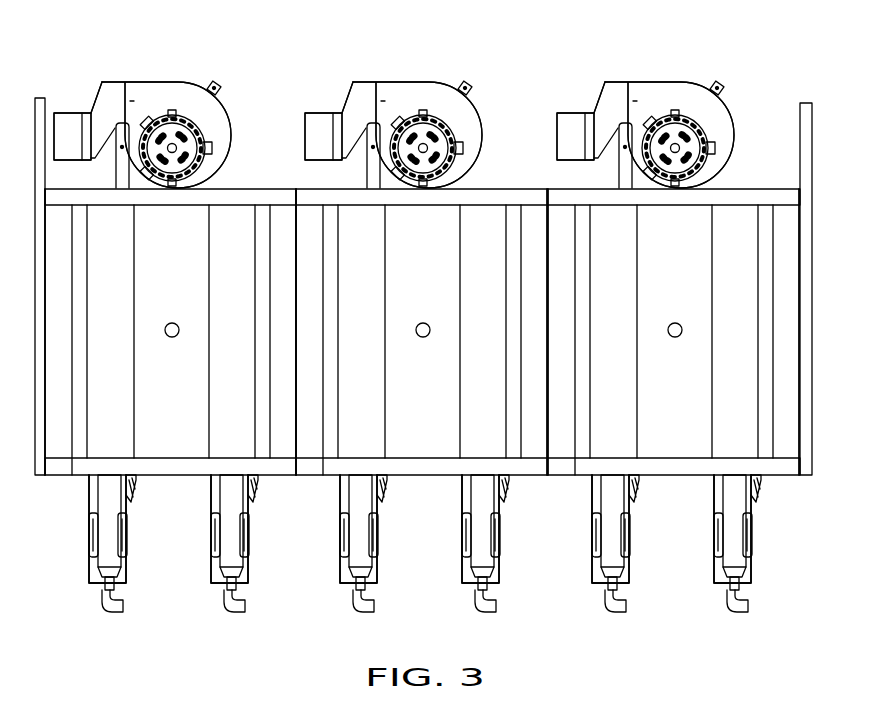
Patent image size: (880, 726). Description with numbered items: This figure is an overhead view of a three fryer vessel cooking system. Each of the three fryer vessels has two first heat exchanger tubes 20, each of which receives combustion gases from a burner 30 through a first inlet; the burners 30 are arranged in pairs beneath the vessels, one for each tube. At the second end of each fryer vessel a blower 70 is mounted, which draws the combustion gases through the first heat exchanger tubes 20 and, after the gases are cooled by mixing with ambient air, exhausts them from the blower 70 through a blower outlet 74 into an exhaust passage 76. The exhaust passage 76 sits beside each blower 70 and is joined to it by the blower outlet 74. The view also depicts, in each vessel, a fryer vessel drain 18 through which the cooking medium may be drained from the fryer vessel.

The fryer vessel drain 18 is at (424, 370).
The first heat exchanger tube 20 is at (72, 281).
The burner 30 is at (180, 530).
The blower 70 is at (123, 82).
The blower outlet 74 is at (356, 85).
The exhaust passage 76 is at (322, 104).